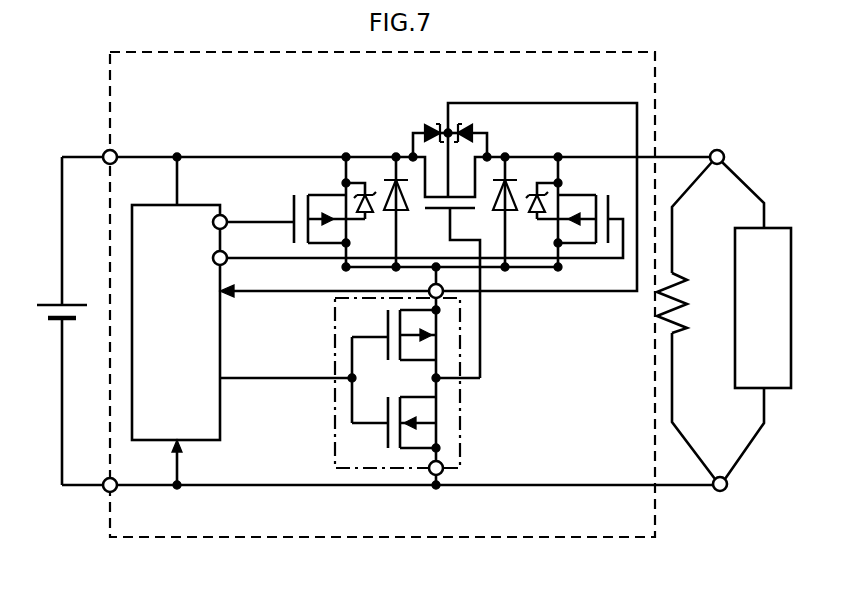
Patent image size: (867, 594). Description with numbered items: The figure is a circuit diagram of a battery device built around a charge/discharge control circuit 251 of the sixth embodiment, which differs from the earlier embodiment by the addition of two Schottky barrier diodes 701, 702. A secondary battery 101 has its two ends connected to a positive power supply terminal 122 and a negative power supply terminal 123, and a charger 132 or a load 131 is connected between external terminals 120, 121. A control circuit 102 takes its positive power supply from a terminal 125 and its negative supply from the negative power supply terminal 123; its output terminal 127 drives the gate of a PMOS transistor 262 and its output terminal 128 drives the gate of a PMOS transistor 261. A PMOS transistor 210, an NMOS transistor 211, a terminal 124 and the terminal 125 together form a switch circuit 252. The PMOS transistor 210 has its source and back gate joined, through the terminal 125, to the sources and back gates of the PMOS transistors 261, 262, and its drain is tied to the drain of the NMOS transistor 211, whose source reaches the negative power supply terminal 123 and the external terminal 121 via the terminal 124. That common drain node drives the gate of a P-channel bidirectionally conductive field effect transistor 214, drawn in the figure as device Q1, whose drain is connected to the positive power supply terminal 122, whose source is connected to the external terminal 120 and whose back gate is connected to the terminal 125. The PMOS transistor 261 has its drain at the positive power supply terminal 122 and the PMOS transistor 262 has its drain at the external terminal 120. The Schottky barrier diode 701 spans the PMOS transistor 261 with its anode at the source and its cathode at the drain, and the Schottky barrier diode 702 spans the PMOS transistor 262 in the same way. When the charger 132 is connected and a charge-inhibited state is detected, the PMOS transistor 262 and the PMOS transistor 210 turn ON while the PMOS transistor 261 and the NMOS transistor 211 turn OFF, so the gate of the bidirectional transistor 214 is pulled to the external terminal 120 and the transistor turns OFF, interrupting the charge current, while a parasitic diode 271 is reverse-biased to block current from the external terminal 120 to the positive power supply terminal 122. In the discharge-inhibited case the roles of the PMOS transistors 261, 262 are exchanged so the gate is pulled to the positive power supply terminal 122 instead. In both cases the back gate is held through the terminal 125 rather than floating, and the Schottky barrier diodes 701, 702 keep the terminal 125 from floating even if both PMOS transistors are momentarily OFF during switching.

The secondary battery 101 is at (52, 322).
The control circuit 102 is at (197, 441).
The external terminal 120 is at (712, 165).
The external terminal 121 is at (705, 472).
The positive power supply terminal 122 is at (107, 150).
The negative power supply terminal 123 is at (106, 492).
The terminal 124 is at (430, 478).
The terminal 125 is at (443, 295).
The output terminal 127 is at (418, 250).
The output terminal 128 is at (253, 230).
The load 131 is at (688, 317).
The charger 132 is at (768, 320).
The PMOS transistor 210 is at (383, 324).
The NMOS transistor 211 is at (383, 430).
The P-channel bidirectionally conductive field effect transistor 214 is at (448, 162).
The charge/discharge control circuit 251 is at (656, 522).
The switch circuit 252 is at (389, 383).
The PMOS transistor 261 is at (315, 196).
The PMOS transistor 262 is at (572, 192).
The parasitic diode 271 is at (343, 180).
The Schottky barrier diode 701 is at (384, 180).
The Schottky barrier diode 702 is at (507, 240).
The bidirectional switching transistor Q1 is at (453, 293).